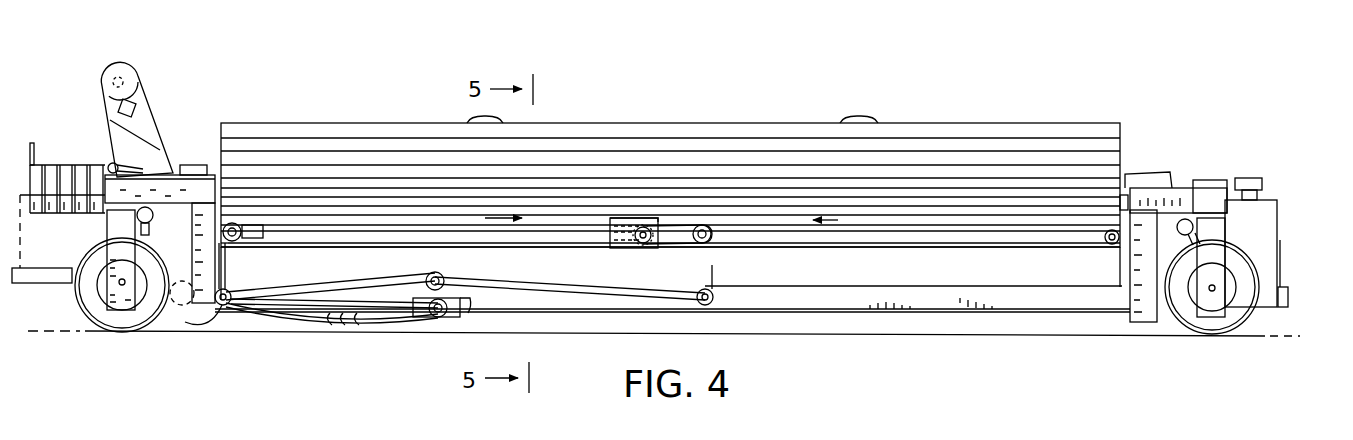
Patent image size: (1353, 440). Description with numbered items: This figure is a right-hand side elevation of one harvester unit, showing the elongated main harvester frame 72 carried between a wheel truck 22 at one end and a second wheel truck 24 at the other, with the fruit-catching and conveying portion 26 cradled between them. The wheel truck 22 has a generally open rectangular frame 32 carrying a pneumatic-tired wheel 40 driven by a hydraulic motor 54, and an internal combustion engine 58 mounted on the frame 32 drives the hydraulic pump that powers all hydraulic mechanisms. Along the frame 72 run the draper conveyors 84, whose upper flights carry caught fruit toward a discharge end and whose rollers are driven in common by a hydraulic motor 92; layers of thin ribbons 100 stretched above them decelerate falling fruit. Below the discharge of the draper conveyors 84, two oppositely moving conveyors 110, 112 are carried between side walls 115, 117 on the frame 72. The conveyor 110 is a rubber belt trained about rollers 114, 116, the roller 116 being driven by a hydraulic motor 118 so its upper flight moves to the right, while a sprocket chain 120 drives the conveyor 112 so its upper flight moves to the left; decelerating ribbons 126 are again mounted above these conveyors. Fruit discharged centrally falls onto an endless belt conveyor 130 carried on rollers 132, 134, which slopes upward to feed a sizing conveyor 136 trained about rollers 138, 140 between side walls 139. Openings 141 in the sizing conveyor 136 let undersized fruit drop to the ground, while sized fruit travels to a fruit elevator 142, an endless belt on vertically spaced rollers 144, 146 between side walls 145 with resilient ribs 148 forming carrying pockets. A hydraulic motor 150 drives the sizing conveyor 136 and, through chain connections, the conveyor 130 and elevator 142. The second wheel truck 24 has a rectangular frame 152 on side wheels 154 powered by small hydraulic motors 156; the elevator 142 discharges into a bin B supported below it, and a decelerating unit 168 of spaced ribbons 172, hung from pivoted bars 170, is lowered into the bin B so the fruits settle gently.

The wheel truck 22 is at (1183, 164).
The second wheel truck 24 is at (196, 155).
The fruit-catching and conveying portion 26 is at (808, 112).
The wheel truck frame 32 is at (1135, 263).
The wheel 40 is at (1235, 330).
The hydraulic motor 54 is at (1222, 230).
The internal combustion engine 58 is at (1273, 215).
The main longitudinally-extending harvester frame 72 is at (900, 313).
The draper conveyors 84 is at (953, 210).
The hydraulic motor 92 is at (1132, 200).
The ribbons 100 is at (693, 153).
The conveyor 110 is at (373, 245).
The conveyor 112 is at (833, 247).
The roller 114 is at (232, 243).
The side wall 115 is at (260, 217).
The roller 116 is at (612, 242).
The side wall 117 is at (617, 220).
The hydraulic motor 118 is at (650, 248).
The sprocket chain 120 is at (670, 248).
The decelerating ribbons 126 is at (400, 205).
The endless belt conveyor 130 is at (510, 277).
The roller 132 is at (708, 317).
The roller 134 is at (438, 279).
The sizing conveyor 136 is at (312, 328).
The roller 138 is at (218, 310).
The side walls 139 is at (470, 313).
The roller 140 is at (447, 318).
The openings 141 is at (330, 320).
The fruit elevator 142 is at (112, 147).
The roller 144 is at (137, 74).
The side walls 145 is at (148, 128).
The roller 146 is at (170, 320).
The resilient ribs 148 is at (112, 115).
The hydraulic motor 150 is at (203, 310).
The wheel truck frame 152 is at (183, 213).
The side wheels 154 is at (90, 300).
The hydraulic motors 156 is at (133, 220).
The decelerating unit 168 is at (47, 154).
The pivoted bars 170 is at (133, 158).
The ribbons 172 is at (88, 148).
The bin B is at (47, 255).